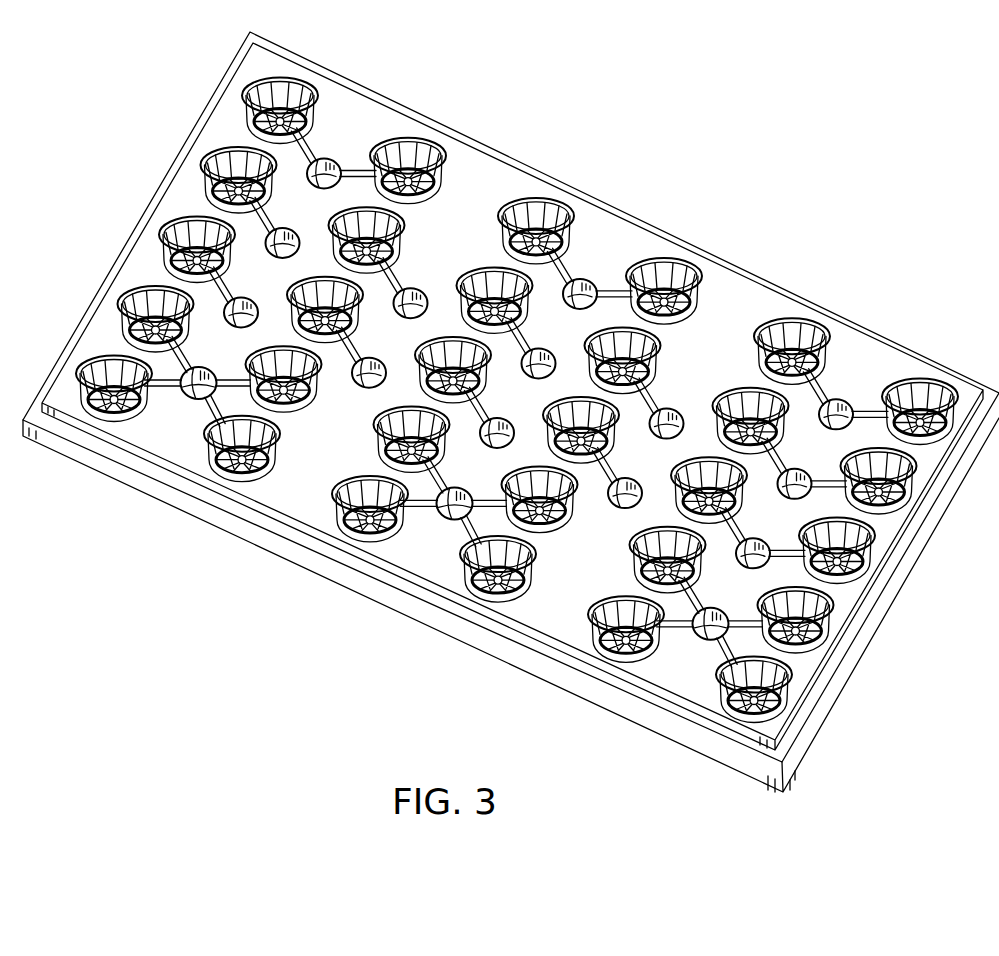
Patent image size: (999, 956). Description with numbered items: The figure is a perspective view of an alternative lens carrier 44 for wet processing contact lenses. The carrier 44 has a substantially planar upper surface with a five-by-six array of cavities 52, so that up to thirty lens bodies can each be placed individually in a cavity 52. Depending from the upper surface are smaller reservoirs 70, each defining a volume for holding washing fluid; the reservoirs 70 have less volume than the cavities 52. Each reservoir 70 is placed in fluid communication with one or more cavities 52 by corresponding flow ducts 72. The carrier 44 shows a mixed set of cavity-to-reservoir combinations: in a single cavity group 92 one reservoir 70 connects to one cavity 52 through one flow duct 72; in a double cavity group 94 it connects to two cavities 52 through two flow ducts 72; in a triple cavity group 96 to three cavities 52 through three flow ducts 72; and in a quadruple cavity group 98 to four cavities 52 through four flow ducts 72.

The alternative lens carrier 44 is at (107, 497).
The cavity 52 is at (538, 197).
The reservoir 70 is at (585, 292).
The flow duct 72 is at (868, 408).
The single cavity group 92 is at (213, 162).
The double cavity group 94 is at (357, 150).
The triple cavity group 96 is at (735, 385).
The quadruple cavity group 98 is at (702, 650).